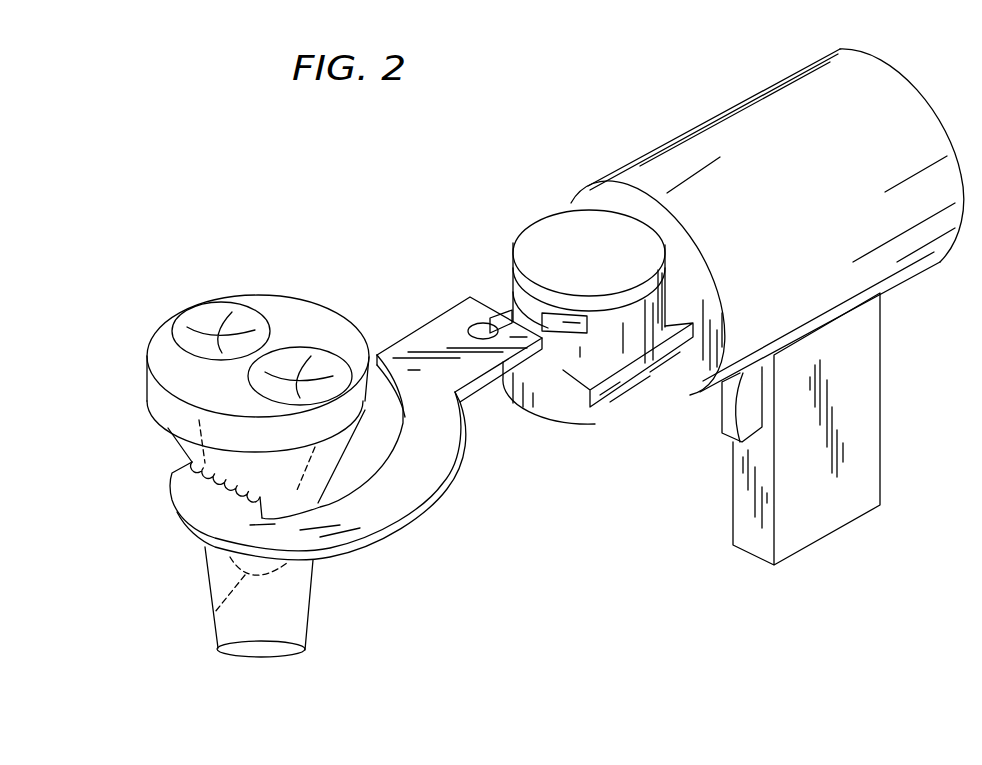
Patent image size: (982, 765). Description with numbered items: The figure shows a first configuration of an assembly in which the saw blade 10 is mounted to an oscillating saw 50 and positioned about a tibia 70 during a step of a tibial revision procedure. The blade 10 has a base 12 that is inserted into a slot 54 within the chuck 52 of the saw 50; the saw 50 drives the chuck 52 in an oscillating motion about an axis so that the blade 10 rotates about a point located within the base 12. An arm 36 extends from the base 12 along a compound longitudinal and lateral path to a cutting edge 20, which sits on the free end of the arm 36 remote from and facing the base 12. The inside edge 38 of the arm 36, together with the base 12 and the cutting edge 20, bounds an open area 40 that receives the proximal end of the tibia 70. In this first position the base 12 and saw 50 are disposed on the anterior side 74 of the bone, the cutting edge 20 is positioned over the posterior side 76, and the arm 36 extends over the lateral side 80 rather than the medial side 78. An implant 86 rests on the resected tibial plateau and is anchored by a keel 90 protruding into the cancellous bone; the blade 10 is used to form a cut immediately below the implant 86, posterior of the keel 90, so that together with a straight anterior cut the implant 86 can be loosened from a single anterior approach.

The saw blade 10 is at (299, 566).
The base 12 is at (450, 302).
The cutting edge 20 is at (234, 510).
The arm 36 is at (378, 512).
The inside edge of arm 38 is at (205, 499).
The open area 40 is at (382, 430).
The saw 50 is at (668, 118).
The chuck 52 is at (525, 225).
The slot 54 is at (560, 325).
The tibia 70 is at (143, 463).
The anterior side 74 is at (296, 310).
The posterior side 76 is at (213, 573).
The medial side 78 is at (133, 377).
The lateral side 80 is at (333, 462).
The implant 86 is at (243, 297).
The keel 90 is at (213, 612).